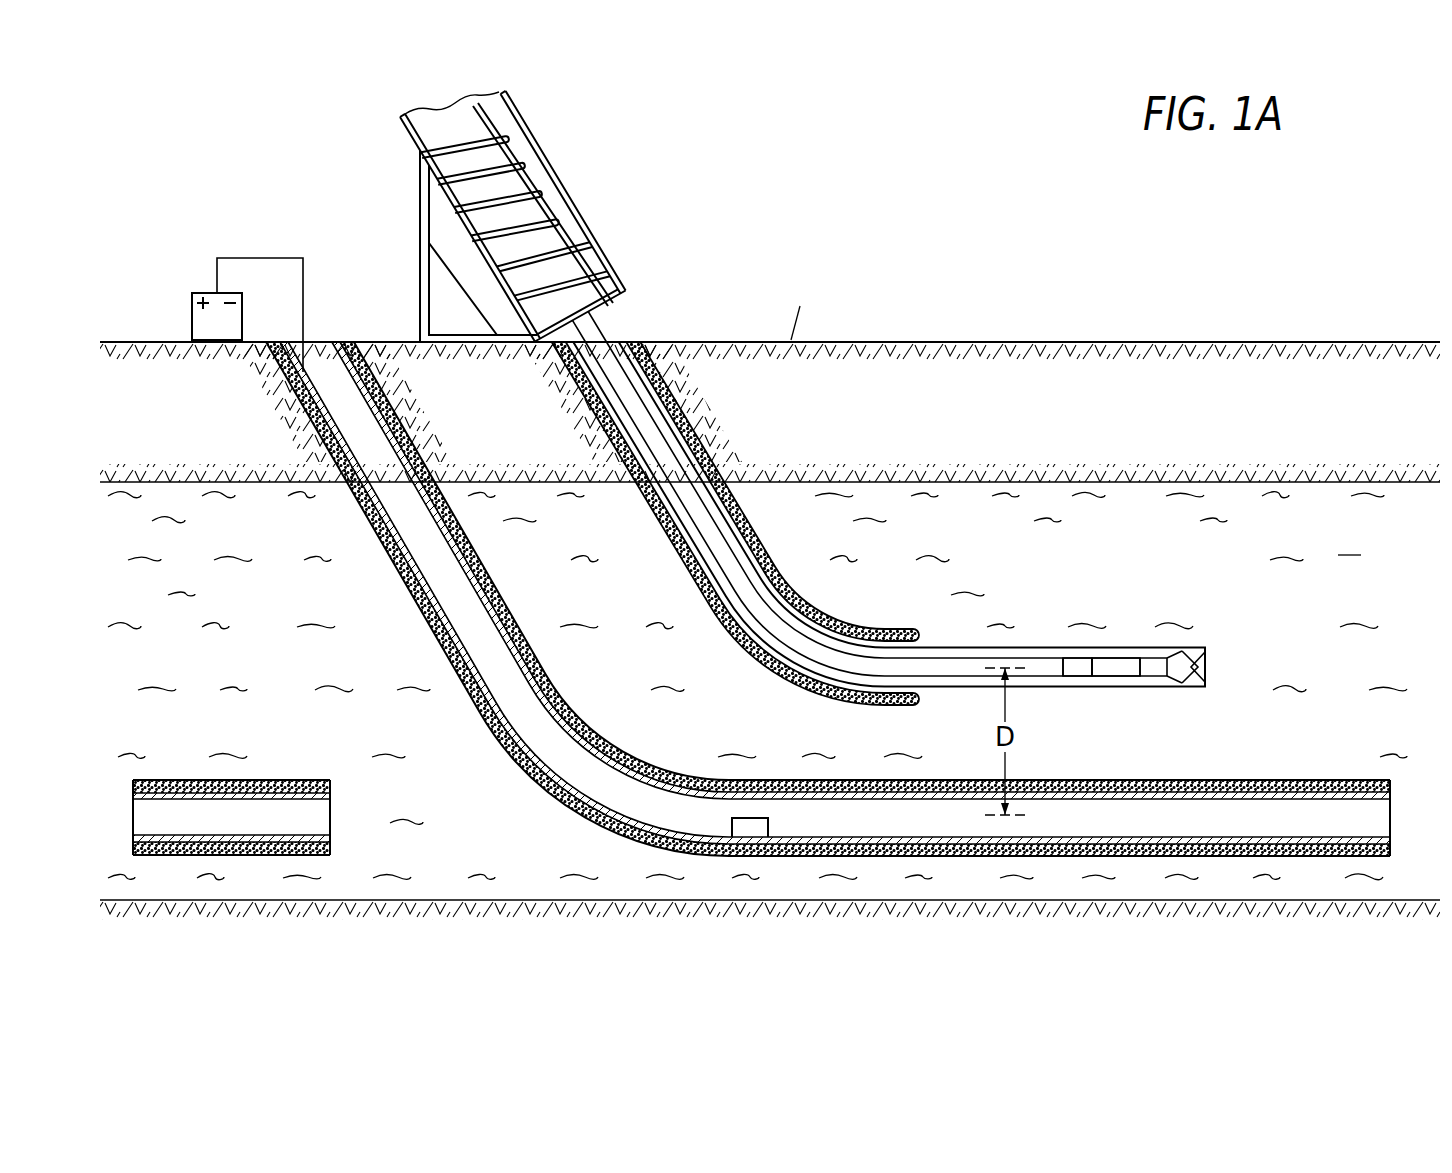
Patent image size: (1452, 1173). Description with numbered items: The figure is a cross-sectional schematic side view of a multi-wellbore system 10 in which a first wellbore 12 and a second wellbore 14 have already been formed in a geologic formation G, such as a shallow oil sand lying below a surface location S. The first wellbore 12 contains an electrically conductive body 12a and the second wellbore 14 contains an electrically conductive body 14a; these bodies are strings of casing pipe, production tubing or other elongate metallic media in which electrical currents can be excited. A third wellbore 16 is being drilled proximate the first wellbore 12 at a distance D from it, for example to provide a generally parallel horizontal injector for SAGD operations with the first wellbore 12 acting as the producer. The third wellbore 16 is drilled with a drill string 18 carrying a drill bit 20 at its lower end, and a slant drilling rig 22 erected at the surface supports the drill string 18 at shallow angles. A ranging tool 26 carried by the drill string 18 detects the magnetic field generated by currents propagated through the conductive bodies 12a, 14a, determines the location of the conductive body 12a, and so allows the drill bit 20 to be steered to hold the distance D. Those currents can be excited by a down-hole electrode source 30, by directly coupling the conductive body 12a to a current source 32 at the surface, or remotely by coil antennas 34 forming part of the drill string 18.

The multi-wellbore system 10 is at (922, 234).
The first wellbore 12 is at (828, 654).
The electrically conductive body 12a is at (1185, 835).
The second wellbore 14 is at (231, 838).
The electrically conductive body 14a is at (236, 835).
The third wellbore 16 is at (920, 530).
The drill string 18 is at (655, 452).
The drill bit 20 is at (1203, 646).
The slant drilling rig 22 is at (560, 141).
The ranging tool 26 is at (1118, 677).
The down-hole electrode source 30 is at (752, 828).
The current source 32 is at (196, 295).
The coil antennas 34 is at (1078, 665).